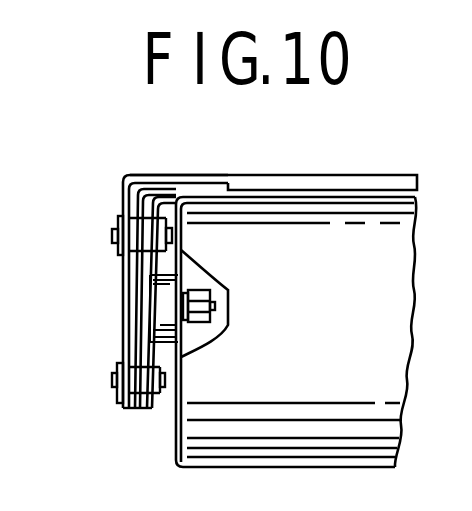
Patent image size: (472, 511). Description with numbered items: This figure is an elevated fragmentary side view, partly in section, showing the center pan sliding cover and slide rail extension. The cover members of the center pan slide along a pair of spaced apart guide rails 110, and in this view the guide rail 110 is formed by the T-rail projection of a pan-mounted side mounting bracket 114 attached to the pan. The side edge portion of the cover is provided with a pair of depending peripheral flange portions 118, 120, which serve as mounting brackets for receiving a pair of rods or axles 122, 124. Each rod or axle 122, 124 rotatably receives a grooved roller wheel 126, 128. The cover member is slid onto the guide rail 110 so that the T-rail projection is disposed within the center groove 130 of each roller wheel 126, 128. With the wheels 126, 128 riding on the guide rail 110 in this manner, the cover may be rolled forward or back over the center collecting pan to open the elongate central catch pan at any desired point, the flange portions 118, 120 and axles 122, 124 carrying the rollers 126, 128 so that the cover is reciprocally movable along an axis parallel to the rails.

The guide rail 110 is at (157, 313).
The pan-mounted side mounting bracket 114 is at (260, 299).
The depending peripheral flange portion 118 is at (127, 200).
The depending peripheral flange portion 120 is at (178, 200).
The rod or axle 122 is at (113, 237).
The rod or axle 124 is at (72, 407).
The grooved roller wheel 126 is at (138, 196).
The grooved roller wheel 128 is at (122, 462).
The center groove 130 is at (153, 205).